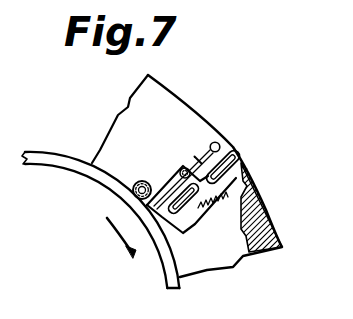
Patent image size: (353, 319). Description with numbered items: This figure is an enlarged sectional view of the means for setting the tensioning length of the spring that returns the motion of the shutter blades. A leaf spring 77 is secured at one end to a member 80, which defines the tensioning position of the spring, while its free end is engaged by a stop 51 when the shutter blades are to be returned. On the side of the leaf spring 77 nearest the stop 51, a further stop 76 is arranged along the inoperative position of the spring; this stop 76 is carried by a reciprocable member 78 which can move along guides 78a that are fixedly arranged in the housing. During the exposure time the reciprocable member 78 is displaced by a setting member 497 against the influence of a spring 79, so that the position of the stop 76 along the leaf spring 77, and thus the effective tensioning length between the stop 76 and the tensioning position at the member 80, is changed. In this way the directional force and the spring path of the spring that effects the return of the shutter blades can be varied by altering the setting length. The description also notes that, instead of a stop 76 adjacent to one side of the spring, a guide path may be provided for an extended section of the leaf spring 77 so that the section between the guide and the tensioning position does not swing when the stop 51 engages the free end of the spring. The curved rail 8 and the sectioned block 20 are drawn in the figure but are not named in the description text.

The curved rail 8 is at (67, 164).
The carriage block 20 is at (181, 96).
The stop 51 is at (132, 191).
The stop 76 is at (199, 162).
The leaf spring 77 is at (167, 183).
The reciprocable member 78 is at (235, 156).
The guides 78a is at (236, 178).
The spring 79 is at (207, 210).
The member 80 is at (212, 144).
The setting member 497 is at (267, 218).